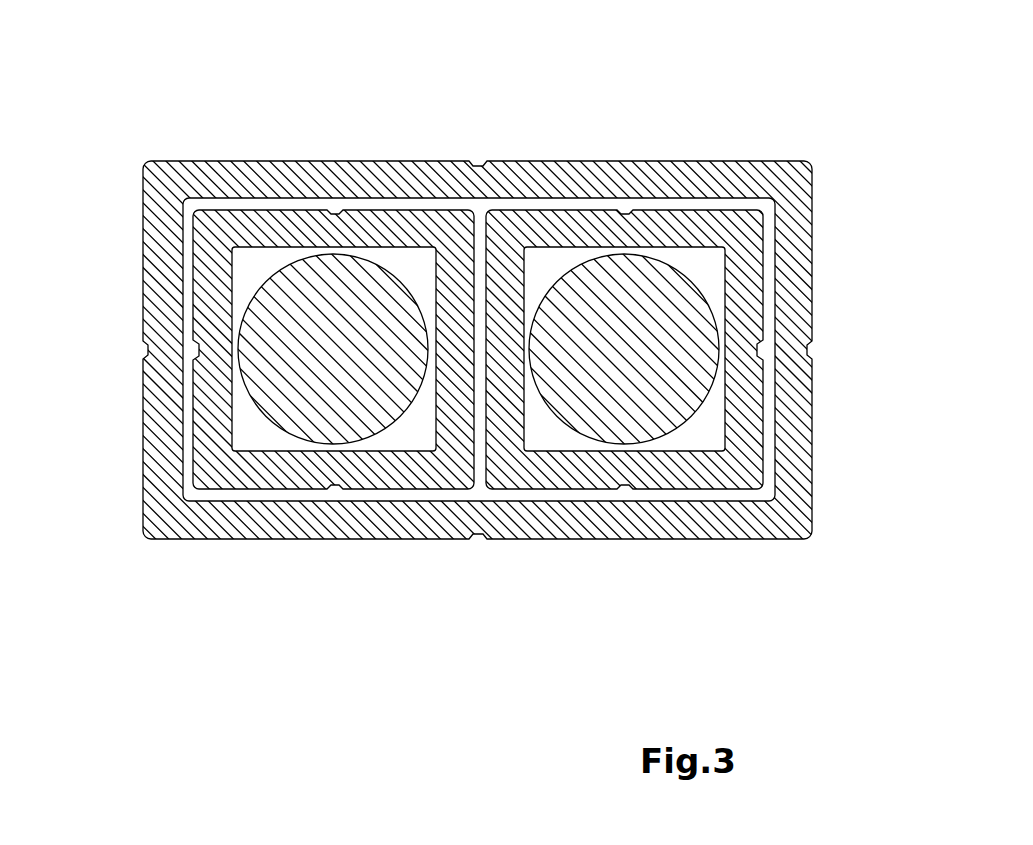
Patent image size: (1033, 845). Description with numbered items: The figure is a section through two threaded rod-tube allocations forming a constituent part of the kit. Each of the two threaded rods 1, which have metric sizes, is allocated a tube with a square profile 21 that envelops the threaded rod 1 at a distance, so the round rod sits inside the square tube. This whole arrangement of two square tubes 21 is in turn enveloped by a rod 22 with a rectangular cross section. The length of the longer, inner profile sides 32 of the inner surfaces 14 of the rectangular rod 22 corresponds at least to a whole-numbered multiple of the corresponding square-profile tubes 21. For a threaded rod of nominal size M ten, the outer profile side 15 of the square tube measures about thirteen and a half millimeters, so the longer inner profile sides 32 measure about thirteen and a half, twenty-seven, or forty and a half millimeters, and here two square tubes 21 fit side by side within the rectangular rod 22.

The conductor 1 is at (286, 290).
The inner surfaces 14 is at (197, 169).
The outer profile side 15 is at (153, 217).
The tube with a square profile 21 is at (212, 313).
The rod with a rectangular cross section 22 is at (399, 161).
The longer, inner profile sides 32 is at (495, 197).